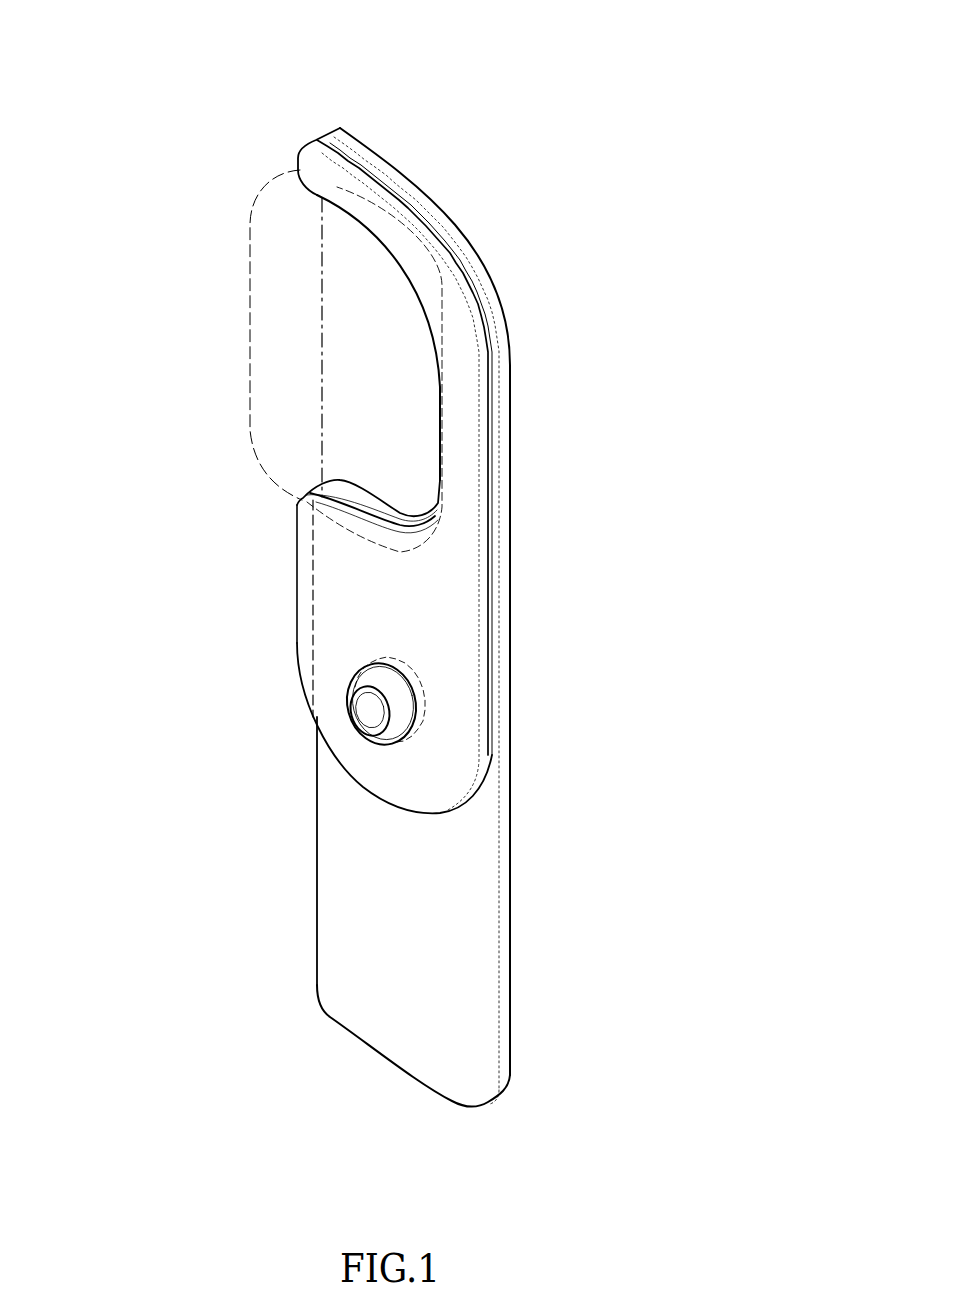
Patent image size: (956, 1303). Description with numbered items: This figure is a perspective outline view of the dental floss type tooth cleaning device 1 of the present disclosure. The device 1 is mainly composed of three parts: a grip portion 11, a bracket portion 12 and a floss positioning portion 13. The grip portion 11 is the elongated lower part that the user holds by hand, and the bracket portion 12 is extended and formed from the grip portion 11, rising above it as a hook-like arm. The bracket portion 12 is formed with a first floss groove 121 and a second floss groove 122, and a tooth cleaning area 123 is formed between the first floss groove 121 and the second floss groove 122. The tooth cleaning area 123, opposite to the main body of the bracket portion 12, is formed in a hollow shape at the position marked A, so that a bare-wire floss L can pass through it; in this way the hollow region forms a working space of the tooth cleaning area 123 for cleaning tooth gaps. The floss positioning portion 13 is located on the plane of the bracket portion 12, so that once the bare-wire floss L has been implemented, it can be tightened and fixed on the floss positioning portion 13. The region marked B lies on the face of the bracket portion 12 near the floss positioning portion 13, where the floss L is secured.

The dental floss type tooth cleaning device 1 is at (688, 22).
The grip portion 11 is at (360, 980).
The bracket portion 12 is at (323, 535).
The first floss groove 121 is at (310, 598).
The second floss groove 122 is at (378, 173).
The tooth cleaning area 123 is at (343, 403).
The floss positioning portion 13 is at (360, 665).
The bare-wire floss L is at (322, 292).
The hollow shape position A is at (378, 337).
The surface region B is at (373, 760).